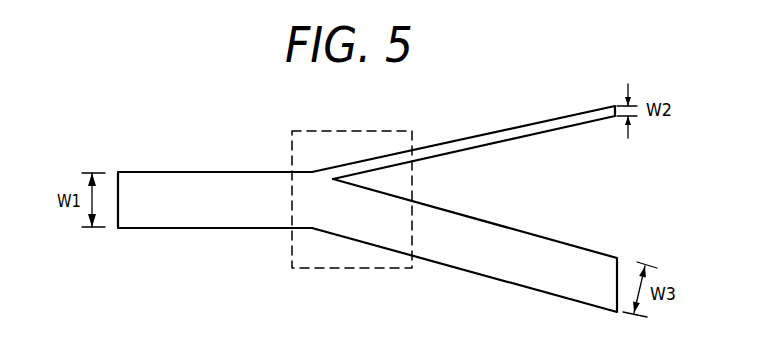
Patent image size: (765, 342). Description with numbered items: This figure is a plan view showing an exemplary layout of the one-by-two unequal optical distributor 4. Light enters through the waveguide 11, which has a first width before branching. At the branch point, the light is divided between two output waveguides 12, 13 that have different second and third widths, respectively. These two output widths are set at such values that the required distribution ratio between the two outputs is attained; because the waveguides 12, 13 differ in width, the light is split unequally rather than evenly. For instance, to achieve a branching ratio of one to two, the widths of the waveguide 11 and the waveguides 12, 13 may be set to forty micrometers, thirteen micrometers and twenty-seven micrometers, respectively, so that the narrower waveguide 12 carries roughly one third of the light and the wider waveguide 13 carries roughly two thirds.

The 1×2 unequal optical distributor 4 is at (357, 268).
The waveguide before branching 11 is at (145, 172).
The waveguide 12 is at (527, 125).
The waveguide 13 is at (503, 281).